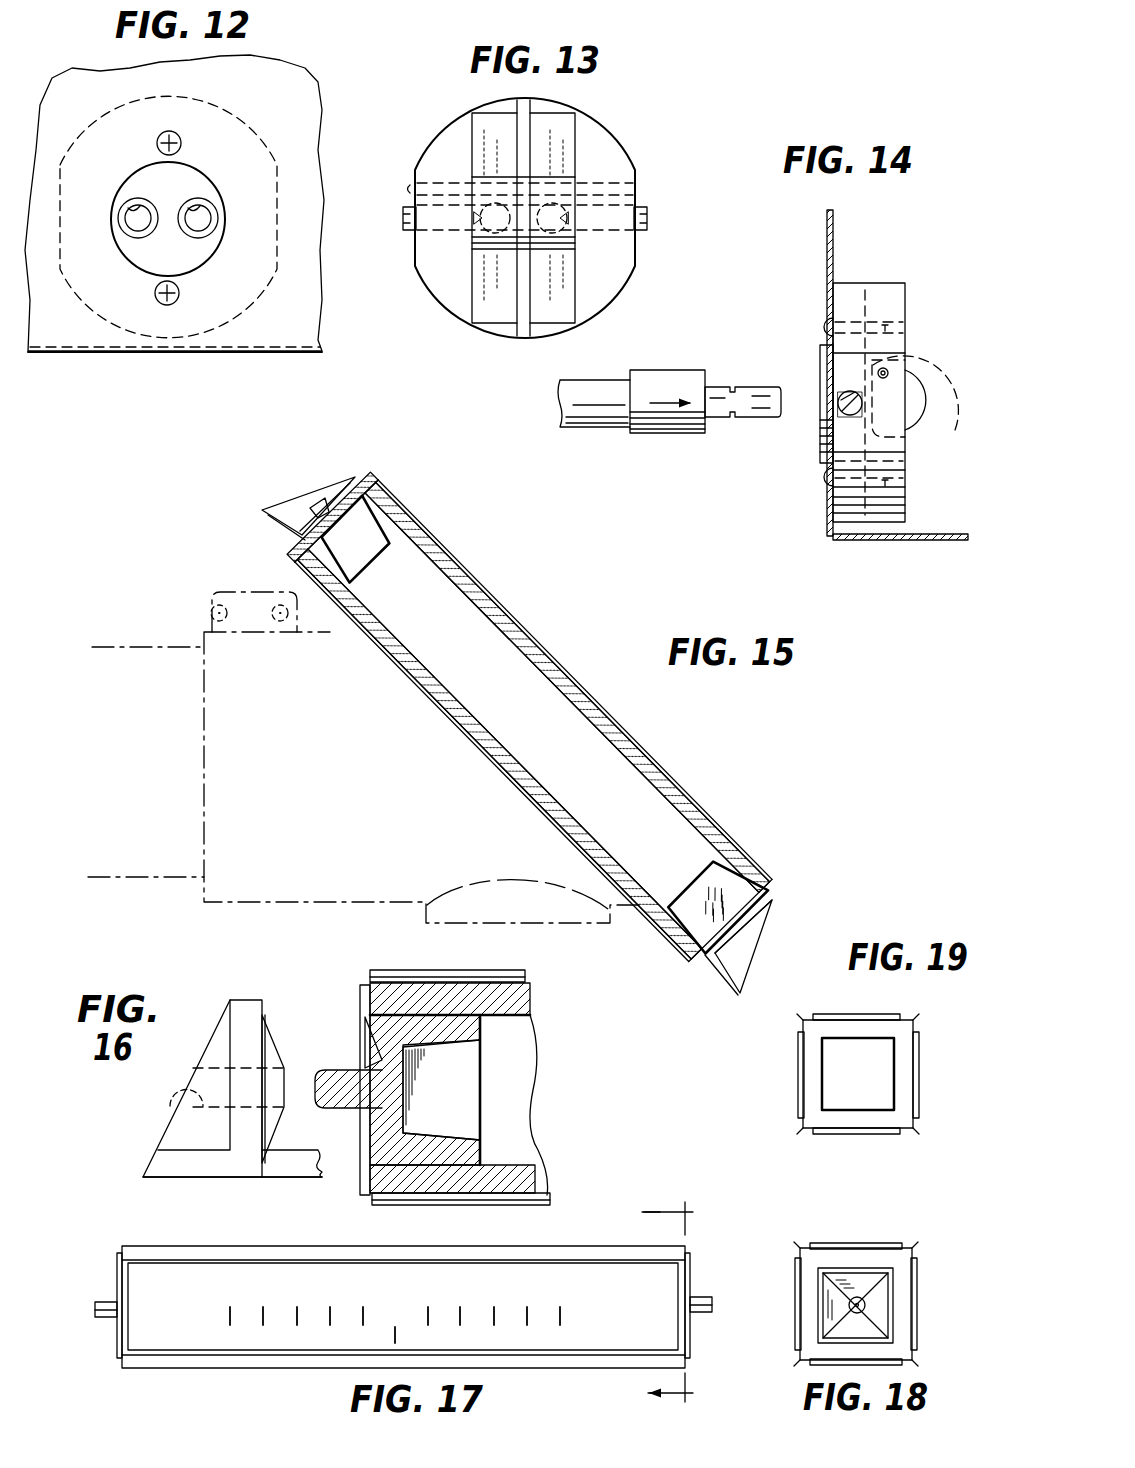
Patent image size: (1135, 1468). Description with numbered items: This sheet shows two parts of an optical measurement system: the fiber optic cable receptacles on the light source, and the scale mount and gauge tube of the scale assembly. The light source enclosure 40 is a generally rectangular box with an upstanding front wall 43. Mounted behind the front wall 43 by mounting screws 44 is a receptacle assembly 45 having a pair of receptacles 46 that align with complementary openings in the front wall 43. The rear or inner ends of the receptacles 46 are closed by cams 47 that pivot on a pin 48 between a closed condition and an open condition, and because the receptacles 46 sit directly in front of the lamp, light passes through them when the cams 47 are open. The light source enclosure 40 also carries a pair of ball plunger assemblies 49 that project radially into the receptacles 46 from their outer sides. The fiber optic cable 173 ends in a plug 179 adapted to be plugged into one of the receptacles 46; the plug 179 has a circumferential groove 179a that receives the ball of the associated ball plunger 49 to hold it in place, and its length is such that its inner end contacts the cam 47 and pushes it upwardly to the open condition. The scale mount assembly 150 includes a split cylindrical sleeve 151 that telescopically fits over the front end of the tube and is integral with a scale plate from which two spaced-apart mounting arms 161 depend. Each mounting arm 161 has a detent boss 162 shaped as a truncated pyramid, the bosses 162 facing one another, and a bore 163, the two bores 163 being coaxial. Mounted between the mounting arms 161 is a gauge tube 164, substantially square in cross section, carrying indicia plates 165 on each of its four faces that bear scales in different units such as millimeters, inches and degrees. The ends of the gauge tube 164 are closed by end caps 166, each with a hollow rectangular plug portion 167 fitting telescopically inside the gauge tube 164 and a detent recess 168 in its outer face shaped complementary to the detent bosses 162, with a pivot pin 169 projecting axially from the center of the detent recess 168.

In FIG. 12, the light source enclosure 40 is at (130, 358).
In FIG. 12, the front wall 43 is at (318, 86).
In FIG. 14, the front wall 43 is at (827, 233).
In FIG. 12, the mounting screws 44 is at (157, 143).
In FIG. 14, the mounting screws 44 is at (822, 322).
In FIG. 12, the receptacle assembly 45 is at (272, 153).
In FIG. 13, the receptacle assembly 45 is at (625, 140).
In FIG. 14, the receptacle assembly 45 is at (892, 280).
In FIG. 12, the receptacles 46 is at (193, 205).
In FIG. 14, the receptacles 46 is at (815, 415).
In FIG. 13, the cams 47 is at (482, 243).
In FIG. 14, the cams 47 is at (917, 422).
In FIG. 13, the pin 48 is at (637, 187).
In FIG. 14, the pin 48 is at (888, 372).
In FIG. 12, the ball plunger assemblies 49 is at (120, 210).
In FIG. 13, the ball plunger assemblies 49 is at (443, 233).
In FIG. 14, the ball plunger assemblies 49 is at (840, 393).
In FIG. 15, the scale mount assembly 150 is at (243, 568).
In FIG. 15, the split cylindrical sleeve 151 is at (262, 907).
In FIG. 15, the mounting arms 161 is at (281, 511).
In FIG. 16, the mounting arms 161 is at (282, 1167).
In FIG. 16, the detent boss 162 is at (277, 1046).
In FIG. 16, the bore 163 is at (168, 1098).
In FIG. 15, the gauge tube 164 is at (674, 800).
In FIG. 16, the gauge tube 164 is at (517, 1043).
In FIG. 17, the gauge tube 164 is at (594, 1242).
In FIG. 19, the gauge tube 164 is at (800, 1088).
In FIG. 15, the indicia plates 165 is at (732, 845).
In FIG. 16, the indicia plates 165 is at (513, 970).
In FIG. 17, the indicia plates 165 is at (242, 1333).
In FIG. 19, the indicia plates 165 is at (840, 1016).
In FIG. 16, the end caps 166 is at (487, 1125).
In FIG. 17, the end caps 166 is at (693, 1332).
In FIG. 18, the end caps 166 is at (874, 1262).
In FIG. 15, the hollow rectangular plug portion 167 is at (378, 526).
In FIG. 16, the hollow rectangular plug portion 167 is at (462, 1100).
In FIG. 18, the hollow rectangular plug portion 167 is at (898, 1313).
In FIG. 16, the detent recess 168 is at (370, 1048).
In FIG. 18, the detent recess 168 is at (843, 1330).
In FIG. 15, the pivot pin 169 is at (321, 488).
In FIG. 16, the pivot pin 169 is at (343, 1108).
In FIG. 17, the pivot pin 169 is at (100, 1300).
In FIG. 18, the pivot pin 169 is at (856, 1297).
In FIG. 14, the fiber optic cable 173 is at (585, 428).
In FIG. 14, the plug 179 is at (722, 425).
In FIG. 14, the circumferential groove 179a is at (718, 386).